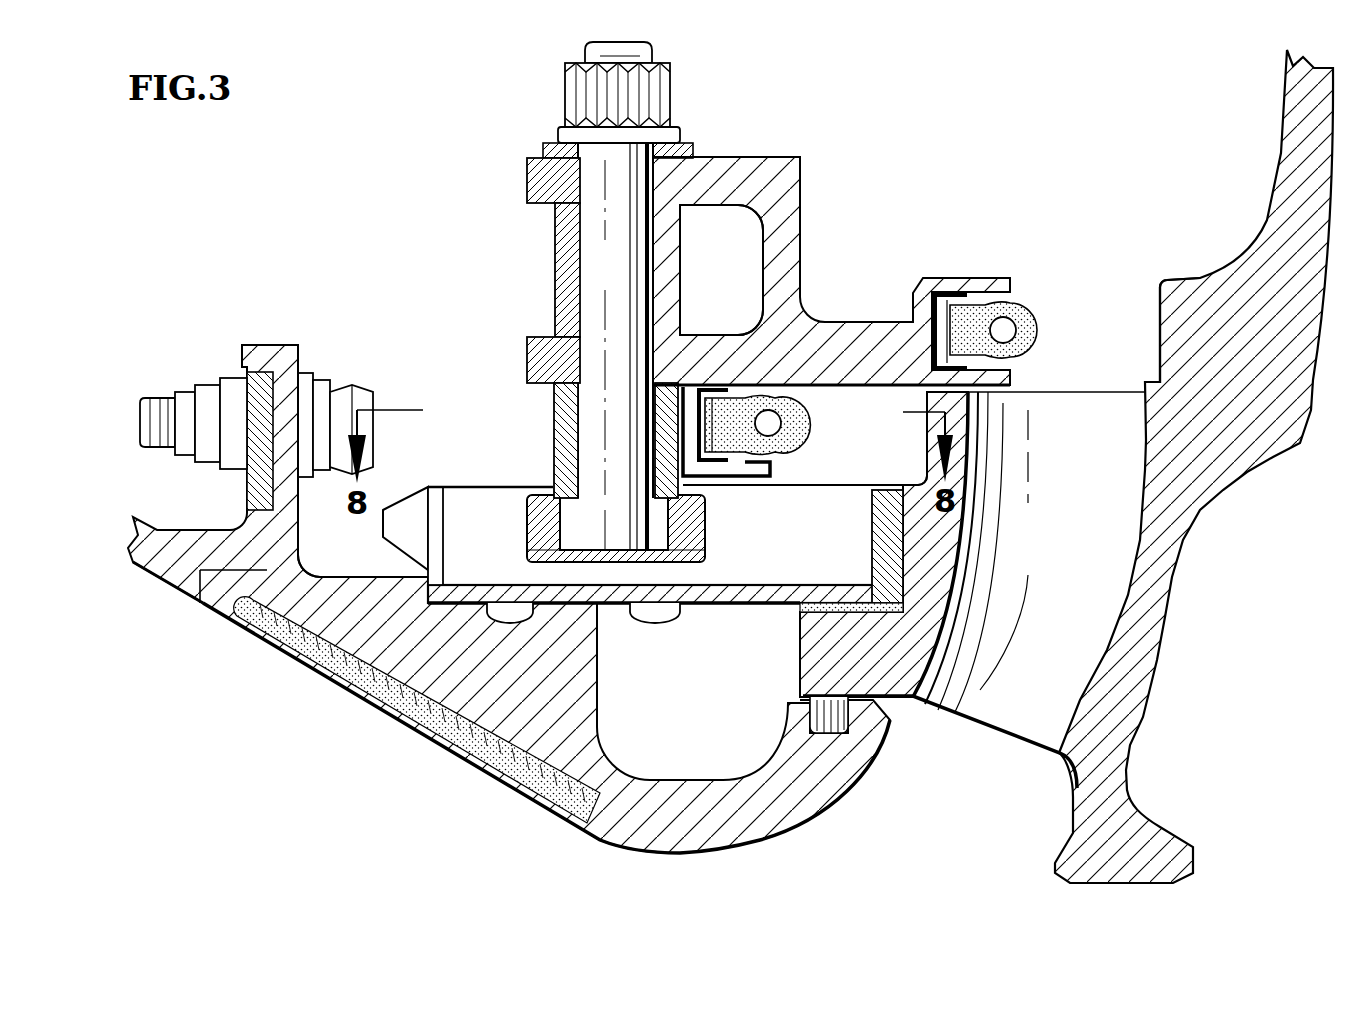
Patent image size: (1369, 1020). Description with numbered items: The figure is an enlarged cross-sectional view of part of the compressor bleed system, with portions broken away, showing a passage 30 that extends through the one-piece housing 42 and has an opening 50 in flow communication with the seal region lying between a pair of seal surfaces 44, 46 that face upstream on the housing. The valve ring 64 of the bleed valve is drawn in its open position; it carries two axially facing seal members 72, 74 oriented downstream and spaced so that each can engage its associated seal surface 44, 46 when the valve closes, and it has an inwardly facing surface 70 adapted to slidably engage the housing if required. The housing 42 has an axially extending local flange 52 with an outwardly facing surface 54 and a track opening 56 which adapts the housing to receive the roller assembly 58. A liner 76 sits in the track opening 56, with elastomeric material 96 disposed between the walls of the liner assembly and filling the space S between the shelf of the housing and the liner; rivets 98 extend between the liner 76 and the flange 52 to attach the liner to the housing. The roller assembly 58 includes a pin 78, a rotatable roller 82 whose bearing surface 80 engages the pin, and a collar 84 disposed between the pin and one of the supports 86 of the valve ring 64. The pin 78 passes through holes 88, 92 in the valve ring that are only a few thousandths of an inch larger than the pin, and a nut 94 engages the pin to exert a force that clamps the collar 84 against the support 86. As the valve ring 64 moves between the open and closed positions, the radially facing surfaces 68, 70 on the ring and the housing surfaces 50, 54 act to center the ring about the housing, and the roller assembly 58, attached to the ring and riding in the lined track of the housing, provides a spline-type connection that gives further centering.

The passage 30 is at (1070, 574).
The housing 42 is at (1225, 440).
The seal surface 44 is at (1157, 310).
The seal surface 46 is at (920, 422).
The opening 50 is at (1045, 392).
The flange 52 is at (386, 530).
The outwardly facing surface 54 is at (400, 412).
The track opening 56 is at (400, 517).
The roller assembly 58 is at (565, 328).
The valve ring 64 is at (740, 158).
The radially facing surface 68 is at (744, 478).
The inwardly facing surface 70 is at (903, 390).
The seal member 72 is at (1036, 332).
The seal member 74 is at (800, 428).
The liner 76 is at (475, 518).
The pin 78 is at (618, 276).
The bearing surface 80 is at (565, 532).
The roller 82 is at (708, 522).
The collar 84 is at (566, 440).
The support 86 is at (662, 352).
The hole 88 is at (595, 352).
The hole 92 is at (592, 182).
The nut 94 is at (590, 97).
The elastomeric material 96 is at (878, 530).
The rivet 98 is at (652, 620).
The space S is at (802, 607).